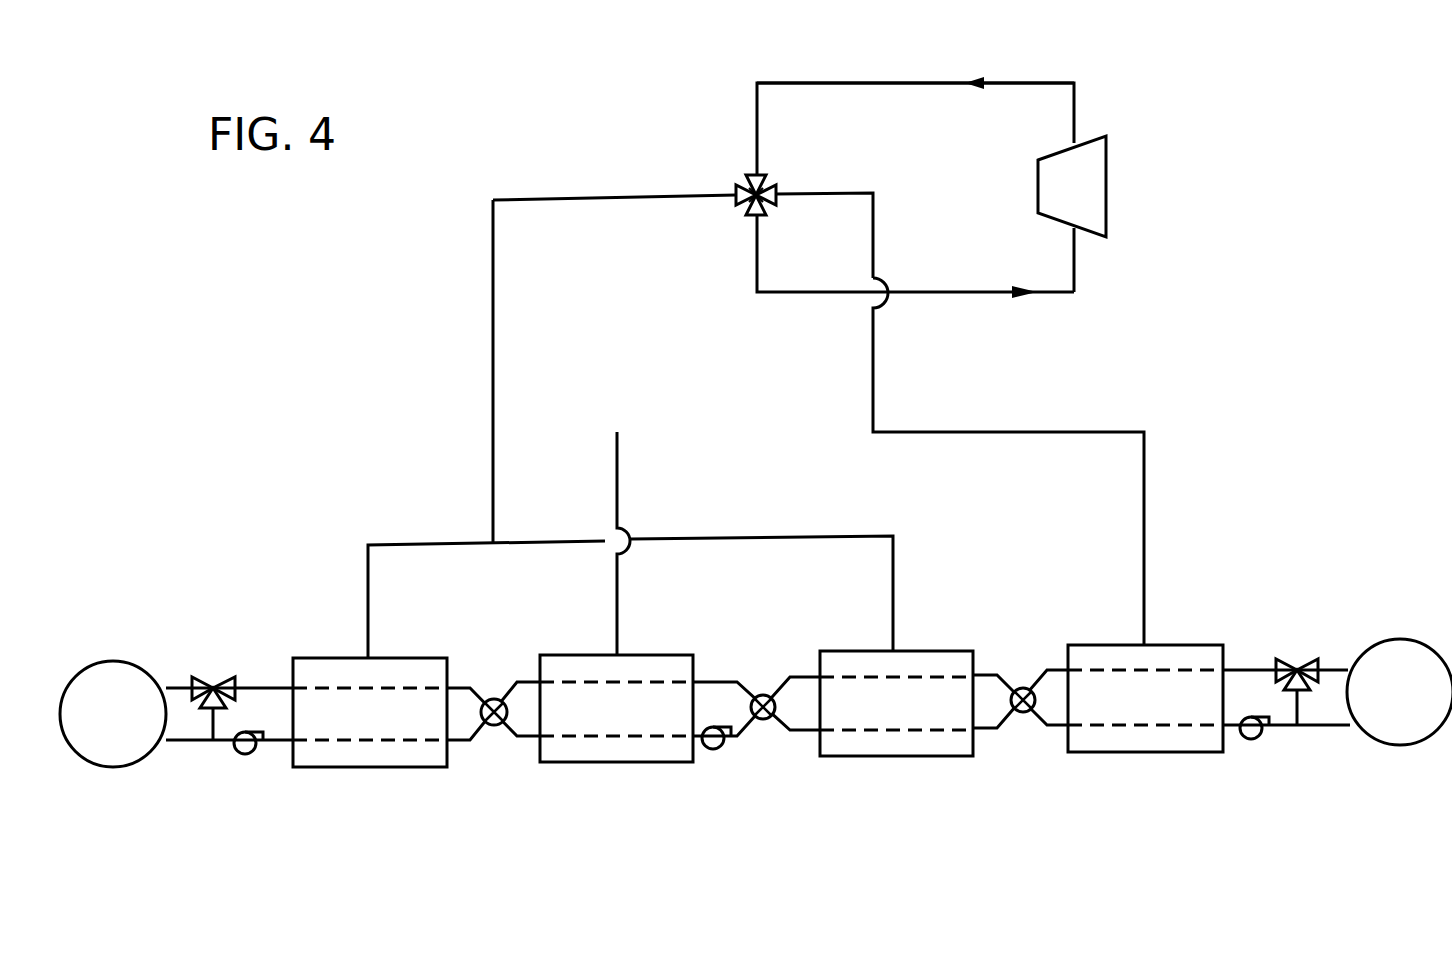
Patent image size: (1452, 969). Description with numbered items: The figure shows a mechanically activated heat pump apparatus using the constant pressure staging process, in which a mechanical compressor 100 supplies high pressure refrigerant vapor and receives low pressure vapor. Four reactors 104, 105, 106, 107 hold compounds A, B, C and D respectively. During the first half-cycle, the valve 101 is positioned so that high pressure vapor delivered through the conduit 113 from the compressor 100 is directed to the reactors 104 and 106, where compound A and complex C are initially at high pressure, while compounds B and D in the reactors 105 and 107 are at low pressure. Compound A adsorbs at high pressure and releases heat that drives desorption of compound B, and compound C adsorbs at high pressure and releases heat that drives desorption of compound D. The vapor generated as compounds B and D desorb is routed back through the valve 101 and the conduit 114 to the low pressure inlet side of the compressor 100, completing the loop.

The compressor 100 is at (1095, 197).
The valve 101 is at (750, 186).
The reactor 104 is at (1170, 752).
The reactor 105 is at (940, 757).
The reactor 106 is at (632, 762).
The reactor 107 is at (397, 767).
The conduit 113 is at (902, 83).
The conduit 114 is at (1000, 290).